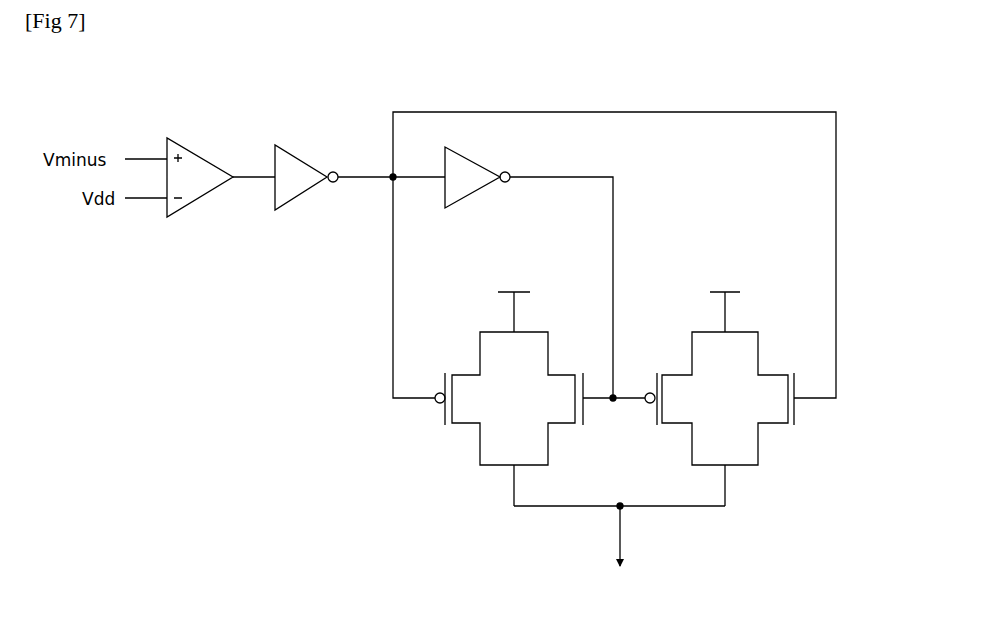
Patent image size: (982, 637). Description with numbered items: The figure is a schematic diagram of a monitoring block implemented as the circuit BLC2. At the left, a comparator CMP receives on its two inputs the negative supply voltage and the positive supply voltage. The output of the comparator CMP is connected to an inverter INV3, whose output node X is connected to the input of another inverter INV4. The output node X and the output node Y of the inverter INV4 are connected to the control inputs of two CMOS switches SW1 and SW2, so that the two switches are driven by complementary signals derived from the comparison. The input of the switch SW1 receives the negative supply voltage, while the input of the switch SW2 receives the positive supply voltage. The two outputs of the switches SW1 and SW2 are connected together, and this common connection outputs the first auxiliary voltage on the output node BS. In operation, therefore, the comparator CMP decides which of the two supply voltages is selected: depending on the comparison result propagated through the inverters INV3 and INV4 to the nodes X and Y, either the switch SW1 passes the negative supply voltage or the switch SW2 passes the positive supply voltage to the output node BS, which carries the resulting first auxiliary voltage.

The circuit BLC2 is at (781, 66).
The comparator CMP is at (205, 202).
The inverter INV3 is at (306, 197).
The inverter INV4 is at (476, 197).
The output node X is at (390, 174).
The output node Y is at (513, 170).
The CMOS switch SW1 is at (428, 456).
The CMOS switch SW2 is at (811, 456).
The output node BS is at (623, 511).